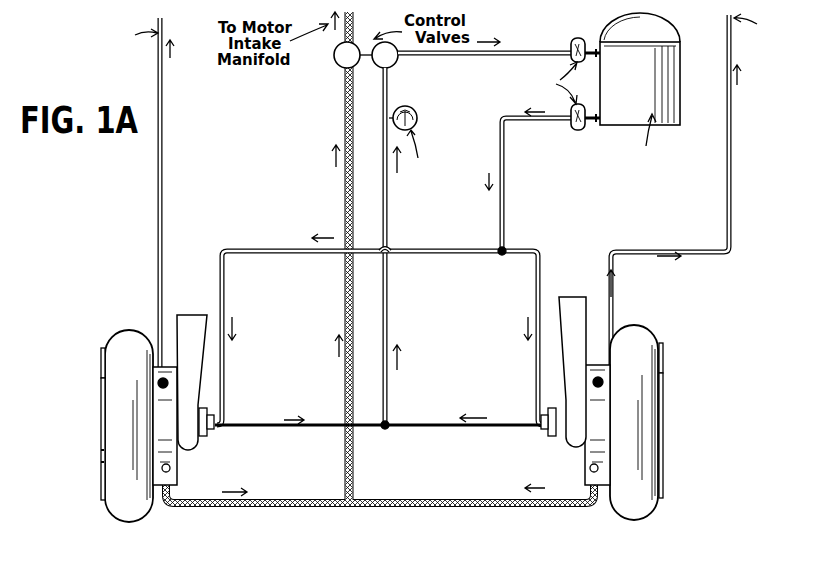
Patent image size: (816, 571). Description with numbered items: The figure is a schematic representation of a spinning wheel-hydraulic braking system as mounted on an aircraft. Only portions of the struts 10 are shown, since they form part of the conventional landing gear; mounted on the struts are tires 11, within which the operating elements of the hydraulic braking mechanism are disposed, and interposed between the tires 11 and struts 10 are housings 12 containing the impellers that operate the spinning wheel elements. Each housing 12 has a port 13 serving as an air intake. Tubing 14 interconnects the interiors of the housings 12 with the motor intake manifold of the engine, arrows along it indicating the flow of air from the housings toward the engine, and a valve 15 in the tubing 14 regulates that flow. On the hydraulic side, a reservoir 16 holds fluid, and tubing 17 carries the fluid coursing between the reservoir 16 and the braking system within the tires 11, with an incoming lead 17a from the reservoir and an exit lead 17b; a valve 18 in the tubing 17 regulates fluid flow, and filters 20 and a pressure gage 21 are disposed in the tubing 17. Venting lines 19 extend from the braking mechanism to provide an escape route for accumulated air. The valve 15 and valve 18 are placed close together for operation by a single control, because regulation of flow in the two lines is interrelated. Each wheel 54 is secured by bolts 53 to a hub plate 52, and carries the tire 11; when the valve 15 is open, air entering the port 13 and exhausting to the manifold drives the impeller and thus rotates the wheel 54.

The strut 10 is at (195, 330).
The tire 11 is at (120, 494).
The housing 12 is at (172, 460).
The port 13 is at (172, 384).
The tubing 14 is at (445, 508).
The valve 15 is at (337, 66).
The reservoir 16 is at (637, 91).
The tubing 17 is at (388, 305).
The incoming lead 17a is at (222, 380).
The exit lead 17b is at (248, 425).
The valve 18 is at (393, 66).
The venting line 19 is at (163, 160).
The filter 20 is at (572, 45).
The pressure gage 21 is at (417, 115).
The hub plate 52 is at (103, 428).
The bolt 53 is at (100, 399).
The wheel 54 is at (100, 372).